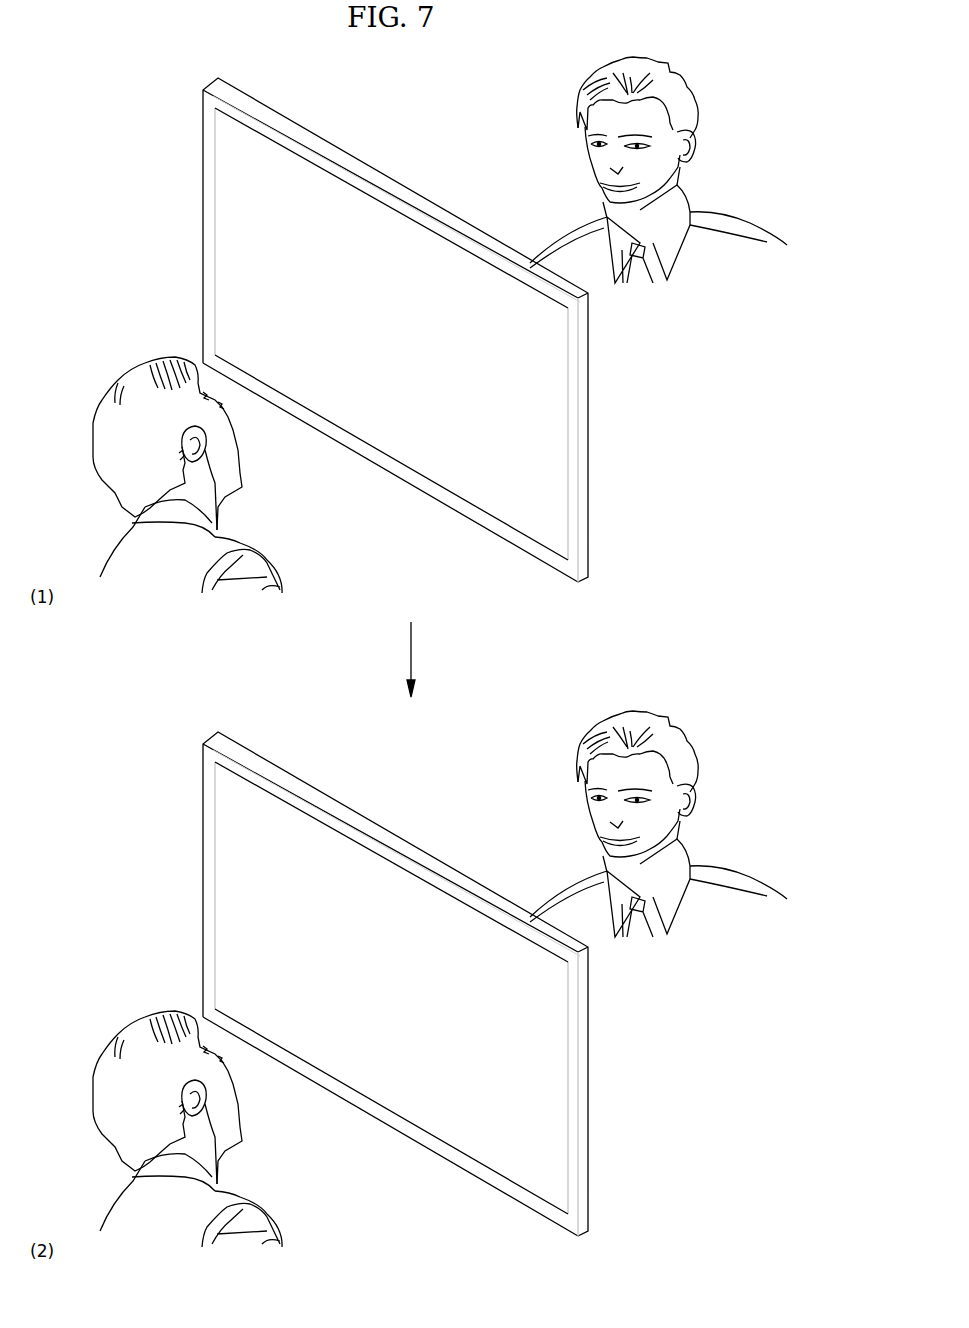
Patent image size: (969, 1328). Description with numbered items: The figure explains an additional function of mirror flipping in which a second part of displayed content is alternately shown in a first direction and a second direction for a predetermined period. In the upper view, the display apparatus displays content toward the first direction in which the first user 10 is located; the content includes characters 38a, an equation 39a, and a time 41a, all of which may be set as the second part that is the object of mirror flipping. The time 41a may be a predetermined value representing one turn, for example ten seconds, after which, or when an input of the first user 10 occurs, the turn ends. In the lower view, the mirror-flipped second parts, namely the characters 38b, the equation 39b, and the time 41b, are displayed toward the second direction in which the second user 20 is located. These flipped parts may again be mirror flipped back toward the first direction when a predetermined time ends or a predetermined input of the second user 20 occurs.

The first user 10 is at (113, 562).
The second user 20 is at (725, 220).
The characters 38a is at (406, 242).
The mirror-flipped characters 38b is at (406, 896).
The equation 39a is at (408, 380).
The mirror-flipped equation 39b is at (408, 1034).
The time 41a is at (543, 523).
The mirror-flipped time 41b is at (543, 1177).